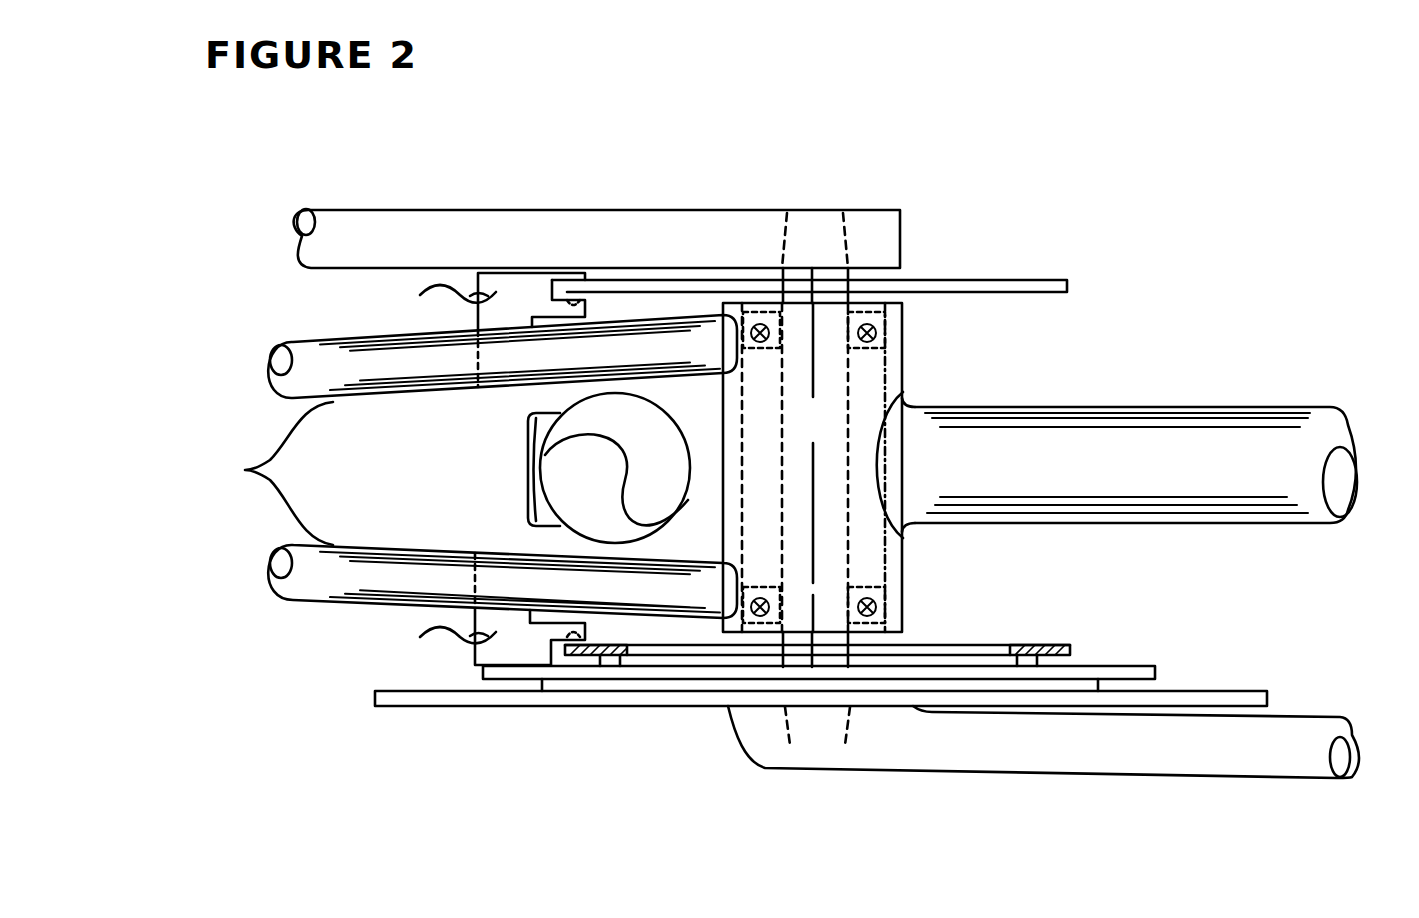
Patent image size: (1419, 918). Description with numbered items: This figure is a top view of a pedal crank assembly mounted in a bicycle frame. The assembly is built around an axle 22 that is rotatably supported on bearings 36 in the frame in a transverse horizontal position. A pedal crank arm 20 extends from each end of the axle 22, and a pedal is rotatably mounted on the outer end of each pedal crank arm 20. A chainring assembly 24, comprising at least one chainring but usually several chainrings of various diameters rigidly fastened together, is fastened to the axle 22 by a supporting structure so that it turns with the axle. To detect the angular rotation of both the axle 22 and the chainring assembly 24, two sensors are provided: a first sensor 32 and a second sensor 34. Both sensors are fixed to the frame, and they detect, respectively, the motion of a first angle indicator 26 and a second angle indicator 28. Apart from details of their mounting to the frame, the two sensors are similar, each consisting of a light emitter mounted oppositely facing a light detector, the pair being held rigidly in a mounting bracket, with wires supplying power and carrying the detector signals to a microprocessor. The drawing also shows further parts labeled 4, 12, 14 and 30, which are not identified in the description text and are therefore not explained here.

The ball 4 is at (520, 455).
The tube 12 is at (1258, 395).
The arms 14 is at (245, 470).
The pedal crank arm 20 is at (333, 202).
The axle 22 is at (817, 207).
The chainring assembly 24 is at (500, 712).
The first angle indicator 26 is at (1018, 275).
The second angle indicator 28 is at (1133, 600).
The housing 30 is at (910, 384).
The first sensor 32 is at (467, 318).
The second sensor 34 is at (467, 625).
The bearings 36 is at (887, 332).